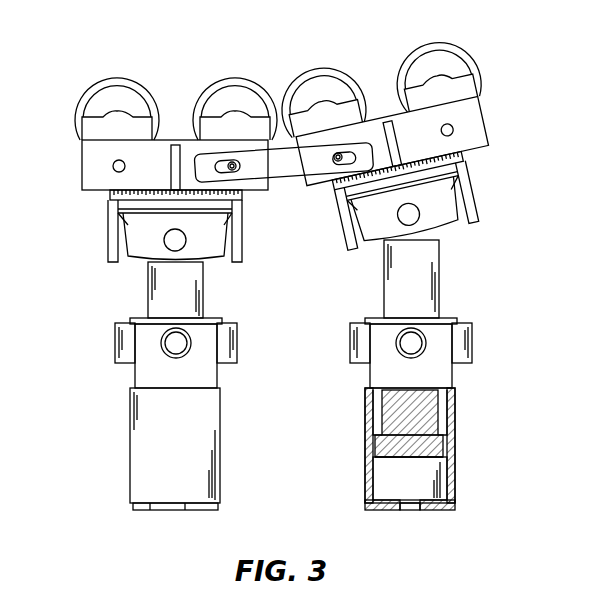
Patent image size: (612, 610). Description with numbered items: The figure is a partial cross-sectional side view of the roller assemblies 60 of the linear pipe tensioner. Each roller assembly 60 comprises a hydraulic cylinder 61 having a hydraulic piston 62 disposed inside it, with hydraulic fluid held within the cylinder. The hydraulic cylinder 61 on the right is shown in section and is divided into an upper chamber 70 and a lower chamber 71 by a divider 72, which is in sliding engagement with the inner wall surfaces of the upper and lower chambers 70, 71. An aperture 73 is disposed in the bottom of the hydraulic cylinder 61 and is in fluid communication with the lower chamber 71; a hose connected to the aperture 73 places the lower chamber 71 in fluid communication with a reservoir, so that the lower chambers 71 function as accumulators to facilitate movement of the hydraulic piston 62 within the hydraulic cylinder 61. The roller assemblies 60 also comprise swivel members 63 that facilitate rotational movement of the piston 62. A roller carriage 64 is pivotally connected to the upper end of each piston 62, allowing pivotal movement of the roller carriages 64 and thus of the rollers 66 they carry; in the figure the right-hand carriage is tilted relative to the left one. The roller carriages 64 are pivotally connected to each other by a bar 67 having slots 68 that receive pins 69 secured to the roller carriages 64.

The roller assembly 60 is at (110, 349).
The hydraulic cylinder 61 is at (130, 432).
The hydraulic piston 62 is at (160, 303).
The swivel member 63 is at (236, 335).
The roller carriage 64 is at (93, 167).
The roller 66 is at (118, 78).
The bar 67 is at (278, 165).
The slot 68 is at (229, 165).
The pin 69 is at (236, 170).
The upper chamber 70 is at (442, 411).
The lower chamber 71 is at (393, 482).
The divider 72 is at (430, 447).
The aperture 73 is at (410, 508).